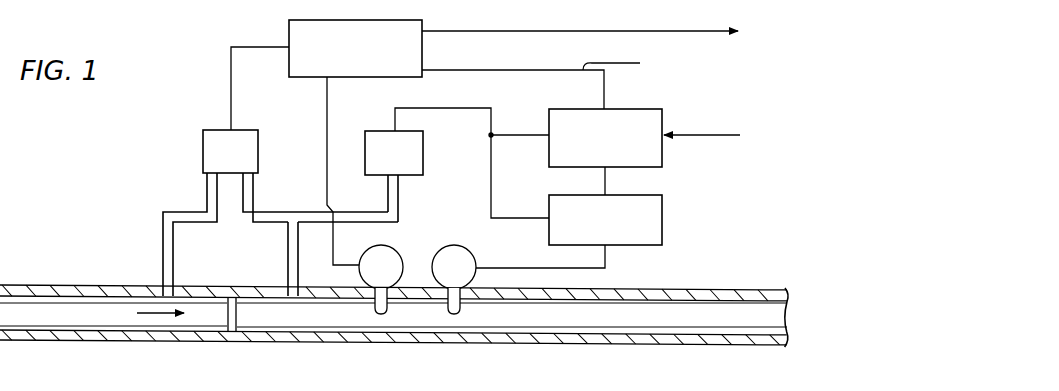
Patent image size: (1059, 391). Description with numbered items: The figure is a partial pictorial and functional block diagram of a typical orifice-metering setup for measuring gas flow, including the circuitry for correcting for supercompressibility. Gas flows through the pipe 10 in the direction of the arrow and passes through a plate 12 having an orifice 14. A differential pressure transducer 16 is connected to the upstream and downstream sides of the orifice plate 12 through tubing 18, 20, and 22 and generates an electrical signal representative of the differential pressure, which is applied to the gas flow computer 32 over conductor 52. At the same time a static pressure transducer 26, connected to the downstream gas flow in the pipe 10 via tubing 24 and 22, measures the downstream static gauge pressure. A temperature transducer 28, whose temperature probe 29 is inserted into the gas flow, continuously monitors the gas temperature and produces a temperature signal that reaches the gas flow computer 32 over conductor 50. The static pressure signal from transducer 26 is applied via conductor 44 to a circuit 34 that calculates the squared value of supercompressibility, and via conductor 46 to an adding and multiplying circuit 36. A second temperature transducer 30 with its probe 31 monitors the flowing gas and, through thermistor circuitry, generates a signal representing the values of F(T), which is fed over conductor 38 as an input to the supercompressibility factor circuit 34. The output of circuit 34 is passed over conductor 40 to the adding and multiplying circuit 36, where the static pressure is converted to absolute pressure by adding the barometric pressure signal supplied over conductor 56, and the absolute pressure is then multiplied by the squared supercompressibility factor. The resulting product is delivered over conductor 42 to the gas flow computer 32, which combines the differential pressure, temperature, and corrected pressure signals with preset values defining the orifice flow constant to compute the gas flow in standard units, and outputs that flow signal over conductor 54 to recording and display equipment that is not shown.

The pipe 10 is at (59, 284).
The plate 12 is at (228, 326).
The orifice 14 is at (242, 313).
The differential pressure transducer 16 is at (203, 145).
The tubing 18 is at (182, 211).
The tubing 20 is at (256, 224).
The tubing 22 is at (288, 263).
The tubing 24 is at (400, 206).
The static pressure transducer 26 is at (424, 160).
The temperature transducer 28 is at (397, 251).
The temperature probe 29 is at (383, 316).
The second temperature transducer 30 is at (475, 254).
The probe 31 is at (455, 316).
The gas flow computer 32 is at (288, 22).
The supercompressibility factor circuit 34 is at (663, 222).
The adding and multiplying circuit 36 is at (568, 108).
The conductor 38 is at (605, 258).
The conductor 40 is at (606, 188).
The conductor 42 is at (462, 70).
The conductor 44 is at (513, 216).
The conductor 46 is at (521, 134).
The conductor 50 is at (326, 114).
The conductor 52 is at (230, 80).
The conductor 54 is at (475, 30).
The conductor 56 is at (716, 155).